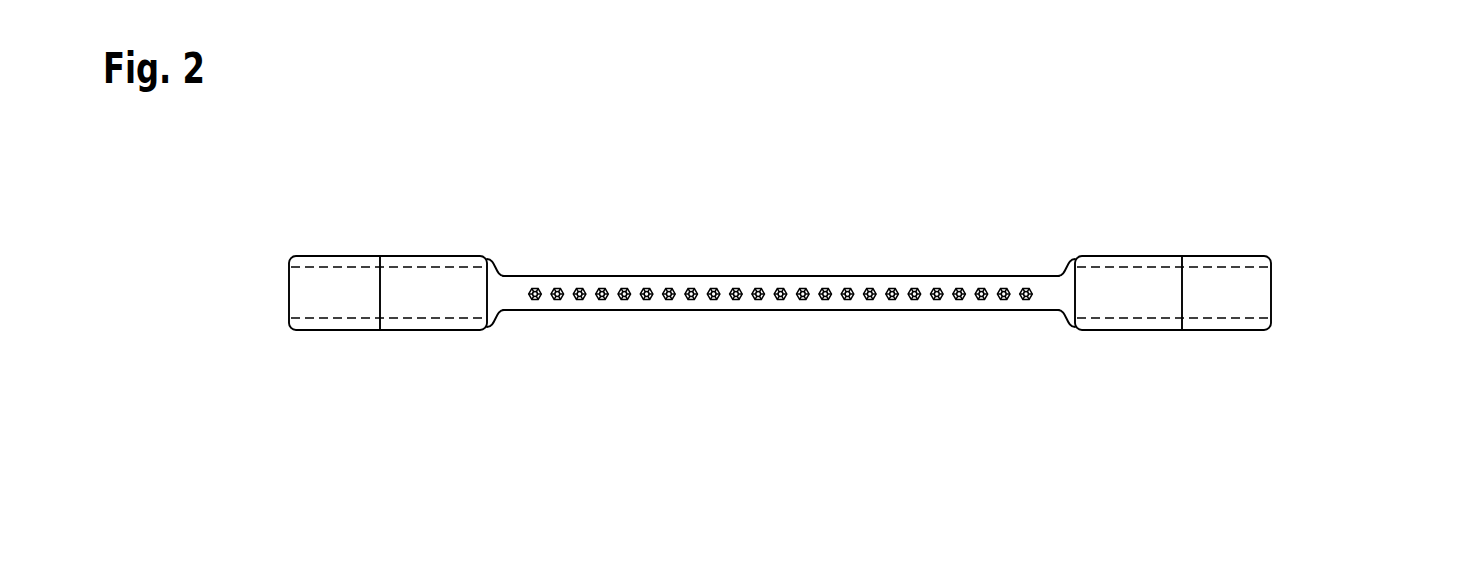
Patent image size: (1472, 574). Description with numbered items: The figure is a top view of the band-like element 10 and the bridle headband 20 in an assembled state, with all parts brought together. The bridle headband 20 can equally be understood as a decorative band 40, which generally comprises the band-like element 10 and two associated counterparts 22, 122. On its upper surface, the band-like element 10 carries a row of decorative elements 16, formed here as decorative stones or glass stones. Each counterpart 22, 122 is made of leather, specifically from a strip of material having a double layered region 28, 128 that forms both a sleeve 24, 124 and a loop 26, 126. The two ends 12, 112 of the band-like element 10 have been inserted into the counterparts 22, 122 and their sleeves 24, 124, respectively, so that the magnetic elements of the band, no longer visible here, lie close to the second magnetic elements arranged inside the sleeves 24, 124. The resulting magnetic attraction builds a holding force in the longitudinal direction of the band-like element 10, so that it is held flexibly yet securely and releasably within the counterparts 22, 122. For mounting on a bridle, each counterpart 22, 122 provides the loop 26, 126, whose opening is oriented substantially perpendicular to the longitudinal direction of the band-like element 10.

The band-like element 10 is at (773, 205).
The end of the band-like element 12 is at (1062, 294).
The decorative elements 16 is at (648, 286).
The bridle headband 20 is at (1343, 131).
The decorative band 40 is at (780, 282).
The counterpart 22 is at (1156, 205).
The sleeve 24 is at (1050, 252).
The loop 26 is at (1218, 370).
The double layered region 28 is at (1132, 322).
The end of the band-like element 112 is at (499, 294).
The counterpart 122 is at (407, 205).
The sleeve 124 is at (513, 252).
The loop 126 is at (343, 370).
The double layered region 128 is at (430, 322).